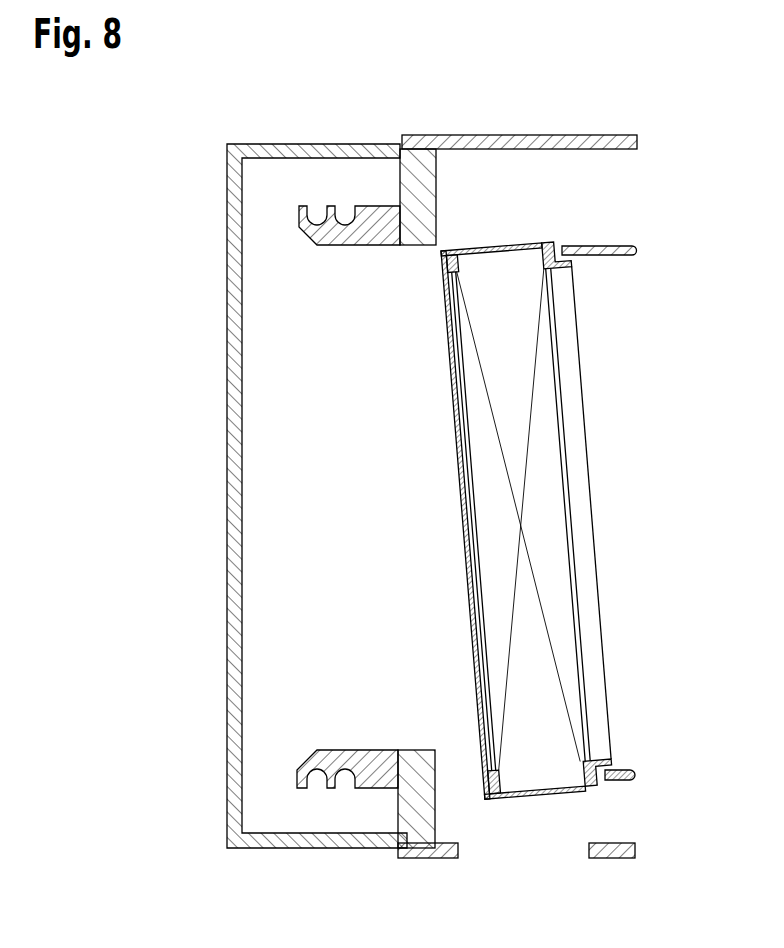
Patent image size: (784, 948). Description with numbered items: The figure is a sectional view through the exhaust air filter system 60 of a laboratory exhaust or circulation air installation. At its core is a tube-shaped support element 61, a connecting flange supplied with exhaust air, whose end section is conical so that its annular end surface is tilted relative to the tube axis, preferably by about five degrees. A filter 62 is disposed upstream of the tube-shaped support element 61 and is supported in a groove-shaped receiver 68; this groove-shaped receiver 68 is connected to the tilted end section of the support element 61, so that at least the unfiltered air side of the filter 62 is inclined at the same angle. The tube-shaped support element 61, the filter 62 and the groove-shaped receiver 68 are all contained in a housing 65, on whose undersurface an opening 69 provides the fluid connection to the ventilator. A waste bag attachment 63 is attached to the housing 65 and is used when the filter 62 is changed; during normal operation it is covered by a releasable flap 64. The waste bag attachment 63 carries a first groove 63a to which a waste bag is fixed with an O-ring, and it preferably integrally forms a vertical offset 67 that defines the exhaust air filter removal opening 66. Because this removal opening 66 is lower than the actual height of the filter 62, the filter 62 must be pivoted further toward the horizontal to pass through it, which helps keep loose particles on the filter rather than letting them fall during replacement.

The exhaust air filter system 60 is at (196, 570).
The tube-shaped support element 61 is at (610, 246).
The filter 62 is at (530, 670).
The waste bag attachment 63 is at (367, 777).
The first groove 63a is at (315, 777).
The releasable flap 64 is at (227, 725).
The housing 65 is at (566, 135).
The exhaust air filter removal opening 66 is at (410, 493).
The vertical offset 67 is at (420, 178).
The groove-shaped receiver 68 is at (500, 248).
The opening 69 is at (555, 850).